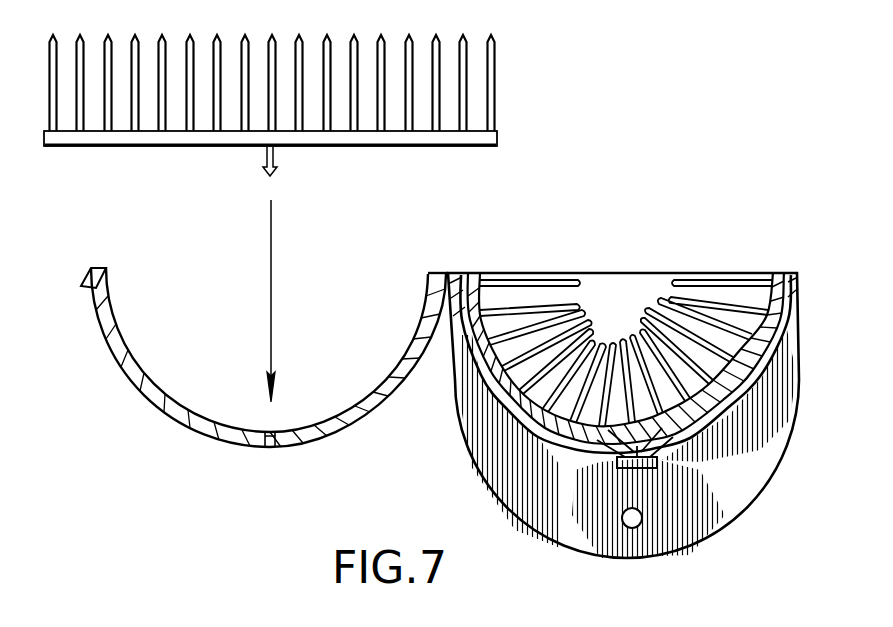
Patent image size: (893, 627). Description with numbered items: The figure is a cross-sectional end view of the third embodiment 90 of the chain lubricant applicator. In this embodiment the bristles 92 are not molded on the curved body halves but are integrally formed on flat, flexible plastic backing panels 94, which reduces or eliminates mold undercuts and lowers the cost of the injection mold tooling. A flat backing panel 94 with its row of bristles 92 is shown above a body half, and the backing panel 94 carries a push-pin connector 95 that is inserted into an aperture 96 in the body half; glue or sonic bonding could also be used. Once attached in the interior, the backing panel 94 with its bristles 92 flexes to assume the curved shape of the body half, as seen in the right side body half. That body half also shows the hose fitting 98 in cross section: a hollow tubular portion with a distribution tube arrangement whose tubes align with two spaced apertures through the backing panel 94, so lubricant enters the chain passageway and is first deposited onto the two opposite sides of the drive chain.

The third embodiment 90 is at (665, 258).
The bristles 92 is at (493, 42).
The flexible plastic backing panel 94 is at (497, 137).
The push-pin connector 95 is at (266, 170).
The aperture 96 is at (272, 440).
The hose fitting 98 is at (656, 466).